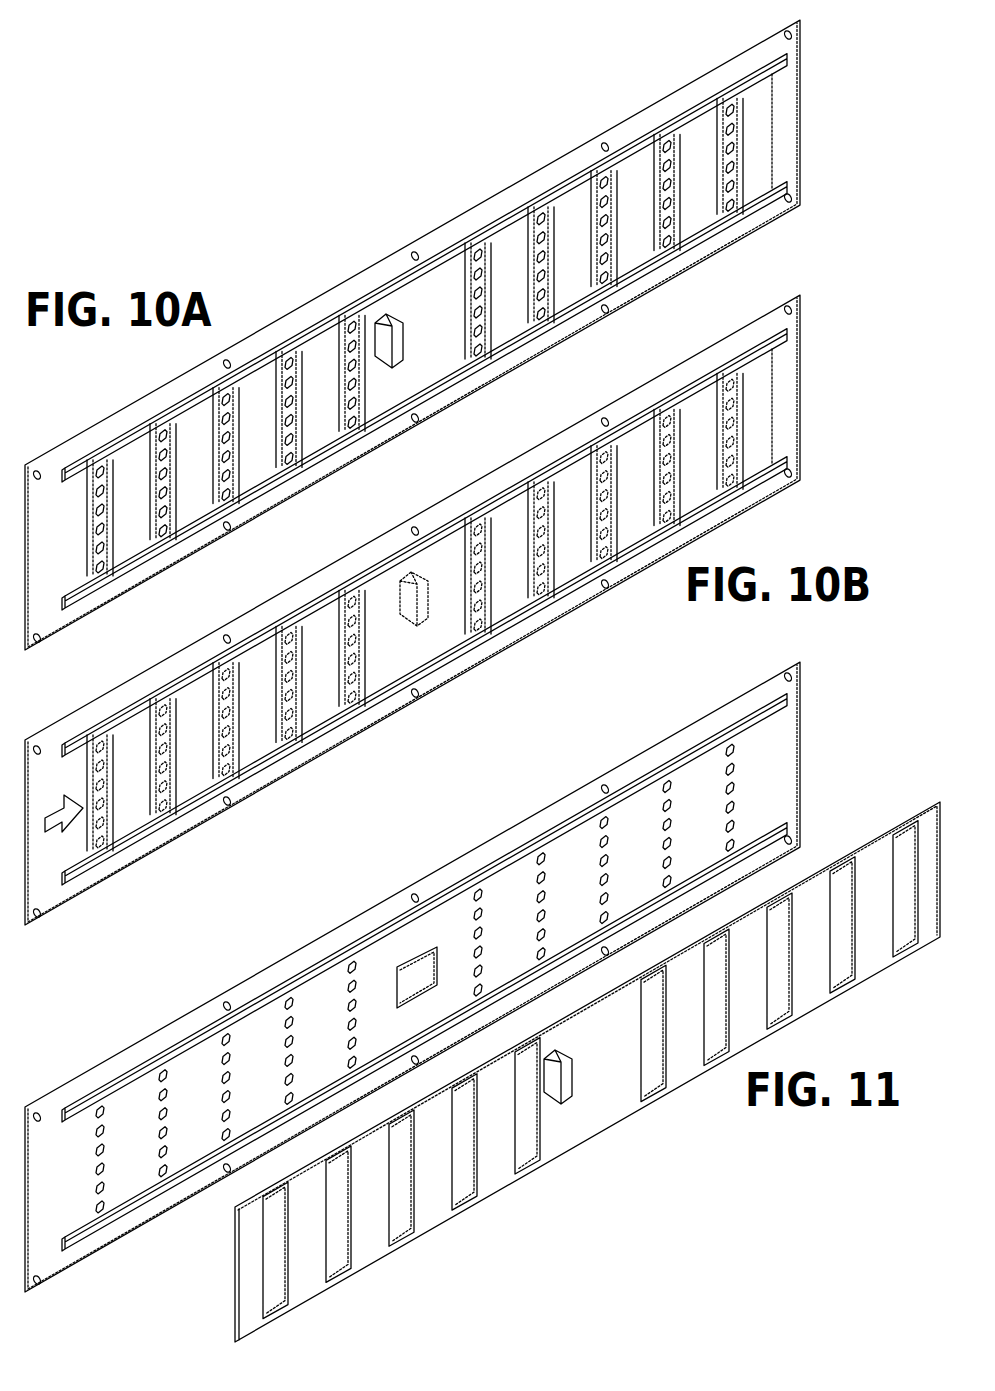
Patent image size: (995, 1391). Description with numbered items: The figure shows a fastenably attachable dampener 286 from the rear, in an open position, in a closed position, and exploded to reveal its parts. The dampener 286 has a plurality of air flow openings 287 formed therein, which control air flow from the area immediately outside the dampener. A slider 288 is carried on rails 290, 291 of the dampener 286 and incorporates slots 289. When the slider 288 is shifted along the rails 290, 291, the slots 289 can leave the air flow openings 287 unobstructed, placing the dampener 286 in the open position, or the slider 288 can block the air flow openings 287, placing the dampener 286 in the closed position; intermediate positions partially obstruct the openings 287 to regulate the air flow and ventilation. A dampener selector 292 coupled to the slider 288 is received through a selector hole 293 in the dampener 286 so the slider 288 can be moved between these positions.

In FIG. 10A, the dampener 286 is at (808, 108).
In FIG. 10B, the dampener 286 is at (808, 380).
In FIG. 10A, the air flow openings 287 is at (545, 218).
In FIG. 10B, the air flow openings 287 is at (668, 415).
In FIG. 11, the air flow openings 287 is at (665, 790).
In FIG. 10A, the slider 288 is at (772, 157).
In FIG. 10B, the slider 288 is at (772, 432).
In FIG. 11, the slider 288 is at (808, 750).
In FIG. 10A, the slots 289 is at (547, 330).
In FIG. 10B, the slots 289 is at (560, 585).
In FIG. 11, the slots 289 is at (838, 990).
In FIG. 10A, the rail 290 is at (725, 88).
In FIG. 10B, the rail 290 is at (725, 360).
In FIG. 11, the rail 290 is at (122, 1110).
In FIG. 10A, the rail 291 is at (740, 215).
In FIG. 10B, the rail 291 is at (740, 490).
In FIG. 11, the rail 291 is at (122, 1230).
In FIG. 10A, the dampener selector 292 is at (390, 305).
In FIG. 10B, the dampener selector 292 is at (410, 572).
In FIG. 11, the dampener selector 292 is at (560, 1105).
In FIG. 11, the selector hole 293 is at (408, 965).